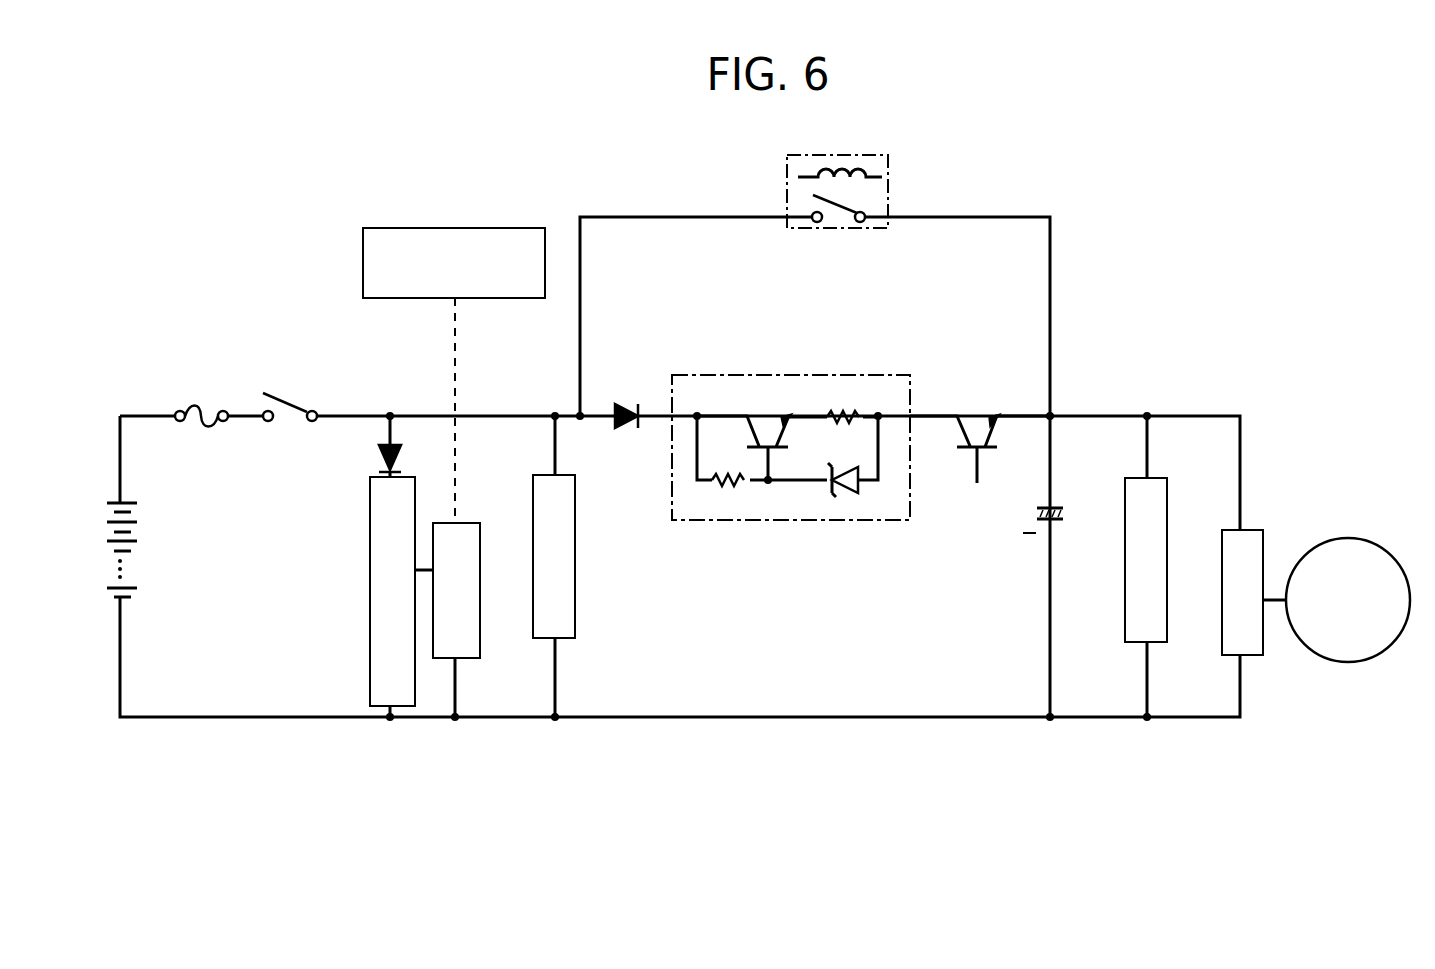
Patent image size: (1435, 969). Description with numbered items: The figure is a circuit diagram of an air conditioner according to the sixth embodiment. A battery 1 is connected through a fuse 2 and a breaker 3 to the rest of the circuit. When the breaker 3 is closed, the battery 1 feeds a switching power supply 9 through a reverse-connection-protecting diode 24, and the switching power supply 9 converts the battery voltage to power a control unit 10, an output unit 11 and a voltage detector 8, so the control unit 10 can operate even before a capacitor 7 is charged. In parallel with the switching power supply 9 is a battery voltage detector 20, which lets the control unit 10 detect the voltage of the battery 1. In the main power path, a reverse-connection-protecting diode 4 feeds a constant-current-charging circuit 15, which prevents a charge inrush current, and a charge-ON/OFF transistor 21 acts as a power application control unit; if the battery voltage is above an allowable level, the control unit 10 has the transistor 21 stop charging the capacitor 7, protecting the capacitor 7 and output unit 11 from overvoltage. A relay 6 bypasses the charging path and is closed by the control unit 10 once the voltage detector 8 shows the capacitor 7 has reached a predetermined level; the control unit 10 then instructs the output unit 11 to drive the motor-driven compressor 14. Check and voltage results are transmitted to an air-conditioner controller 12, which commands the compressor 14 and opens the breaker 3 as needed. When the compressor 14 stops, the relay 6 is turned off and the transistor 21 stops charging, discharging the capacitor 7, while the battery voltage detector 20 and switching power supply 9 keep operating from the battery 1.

The battery 1 is at (153, 538).
The fuse 2 is at (200, 395).
The breaker 3 is at (290, 393).
The reverse-connection-protecting diode 4 is at (627, 390).
The relay 6 is at (888, 182).
The capacitor 7 is at (1063, 495).
The voltage detector 8 is at (1130, 645).
The switching power supply 9 is at (368, 652).
The control unit 10 is at (478, 523).
The output unit 11 is at (1222, 655).
The air-conditioner controller 12 is at (455, 228).
The motor-driven compressor 14 is at (1355, 538).
The constant-current-charging circuit 15 is at (780, 375).
The battery voltage detector 20 is at (575, 590).
The charge-ON/OFF transistor 21 is at (965, 490).
The reverse-connection-protecting diode 24 is at (362, 457).